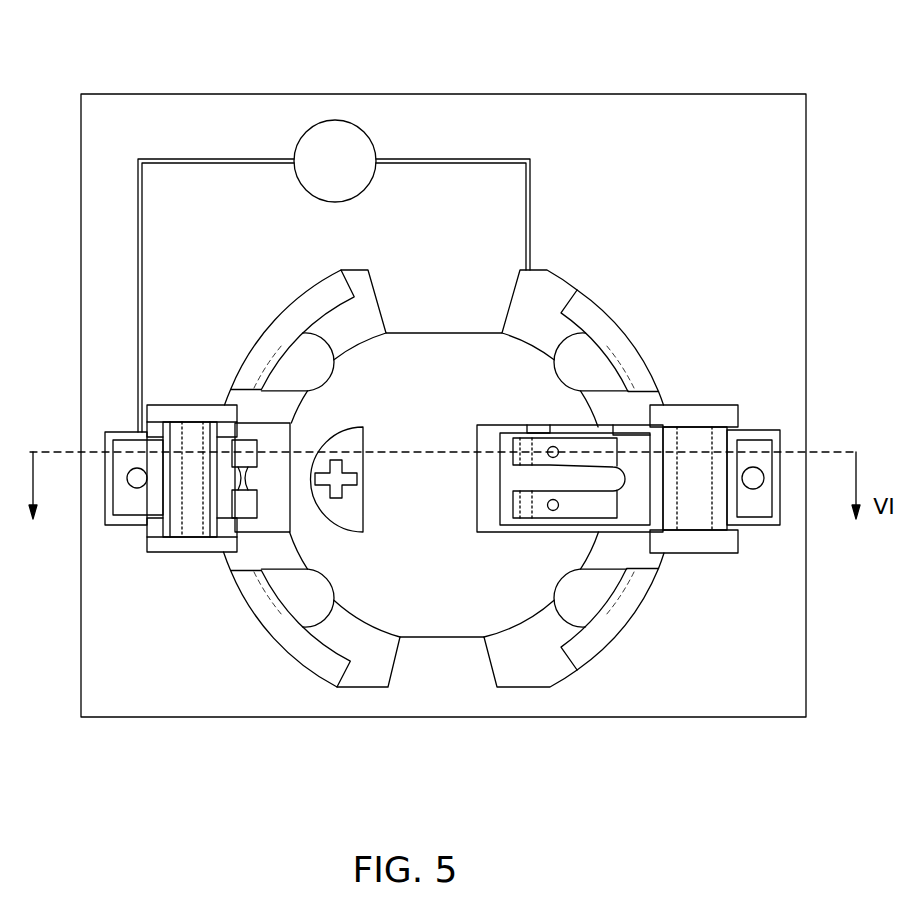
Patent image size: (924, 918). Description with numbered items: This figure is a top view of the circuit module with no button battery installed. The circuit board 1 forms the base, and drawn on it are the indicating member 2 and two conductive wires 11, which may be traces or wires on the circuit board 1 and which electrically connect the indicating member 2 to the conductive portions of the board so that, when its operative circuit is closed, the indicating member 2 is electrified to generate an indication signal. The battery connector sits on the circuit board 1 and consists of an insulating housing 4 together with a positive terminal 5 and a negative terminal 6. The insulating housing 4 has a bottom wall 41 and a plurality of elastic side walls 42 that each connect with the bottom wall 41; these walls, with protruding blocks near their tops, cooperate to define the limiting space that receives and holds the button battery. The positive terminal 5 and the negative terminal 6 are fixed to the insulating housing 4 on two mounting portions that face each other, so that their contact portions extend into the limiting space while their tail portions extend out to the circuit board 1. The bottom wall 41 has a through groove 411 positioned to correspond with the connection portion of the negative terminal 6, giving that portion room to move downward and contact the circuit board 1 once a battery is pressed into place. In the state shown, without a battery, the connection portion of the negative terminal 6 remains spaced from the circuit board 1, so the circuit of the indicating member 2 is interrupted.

The circuit board 1 is at (777, 116).
The indicating member 2 is at (315, 136).
The conductive wire 11 is at (138, 245).
The insulating housing 4 is at (609, 302).
The bottom wall 41 is at (444, 517).
The through groove 411 is at (488, 520).
The elastic side wall 42 is at (290, 322).
The positive terminal 5 is at (190, 520).
The negative terminal 6 is at (700, 518).